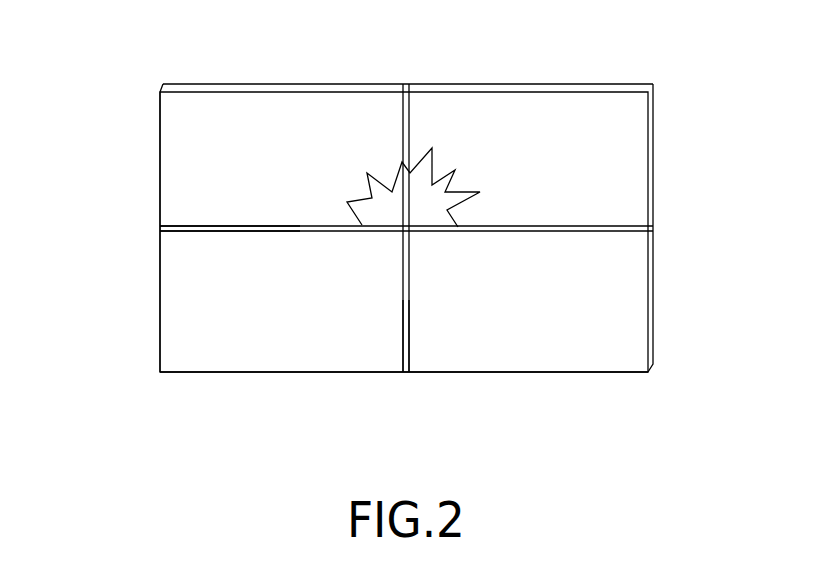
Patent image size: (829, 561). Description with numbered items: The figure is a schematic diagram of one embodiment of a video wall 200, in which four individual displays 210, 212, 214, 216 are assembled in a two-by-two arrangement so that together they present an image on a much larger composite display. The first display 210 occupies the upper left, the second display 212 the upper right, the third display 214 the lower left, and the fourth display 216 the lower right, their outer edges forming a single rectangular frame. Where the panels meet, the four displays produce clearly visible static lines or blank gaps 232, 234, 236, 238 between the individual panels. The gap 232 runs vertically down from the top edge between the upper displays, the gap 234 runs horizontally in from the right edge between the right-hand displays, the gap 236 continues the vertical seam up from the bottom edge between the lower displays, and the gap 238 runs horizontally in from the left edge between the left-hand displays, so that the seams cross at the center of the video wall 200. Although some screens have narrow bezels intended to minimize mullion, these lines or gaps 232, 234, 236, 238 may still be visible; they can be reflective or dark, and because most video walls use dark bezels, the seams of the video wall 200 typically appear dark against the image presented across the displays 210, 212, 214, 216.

The video wall 200 is at (104, 370).
The display 210 is at (168, 110).
The display 212 is at (635, 105).
The display 214 is at (165, 272).
The display 216 is at (628, 360).
The gap 232 is at (420, 66).
The gap 234 is at (685, 225).
The gap 236 is at (407, 400).
The gap 238 is at (132, 226).